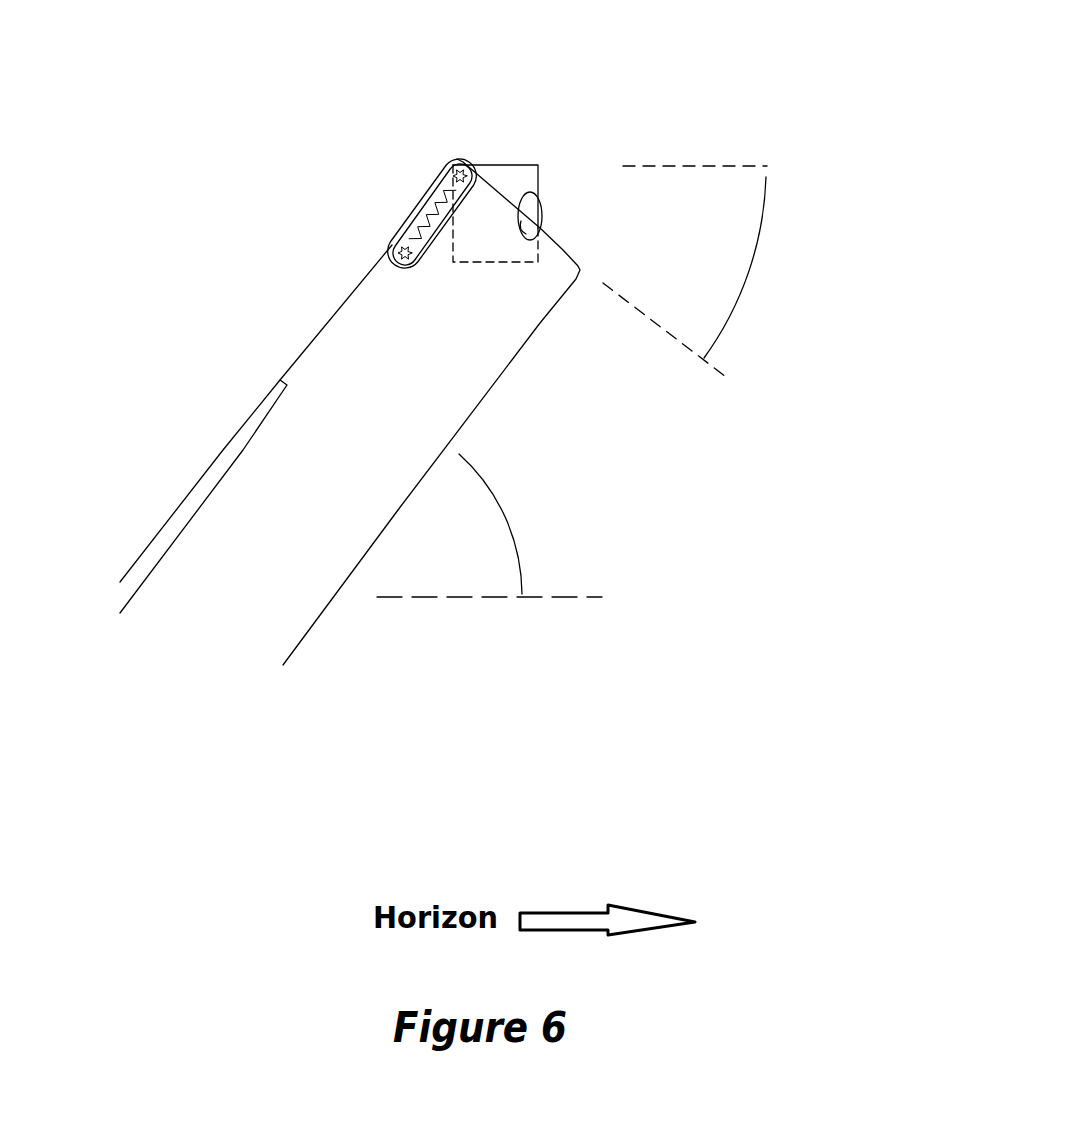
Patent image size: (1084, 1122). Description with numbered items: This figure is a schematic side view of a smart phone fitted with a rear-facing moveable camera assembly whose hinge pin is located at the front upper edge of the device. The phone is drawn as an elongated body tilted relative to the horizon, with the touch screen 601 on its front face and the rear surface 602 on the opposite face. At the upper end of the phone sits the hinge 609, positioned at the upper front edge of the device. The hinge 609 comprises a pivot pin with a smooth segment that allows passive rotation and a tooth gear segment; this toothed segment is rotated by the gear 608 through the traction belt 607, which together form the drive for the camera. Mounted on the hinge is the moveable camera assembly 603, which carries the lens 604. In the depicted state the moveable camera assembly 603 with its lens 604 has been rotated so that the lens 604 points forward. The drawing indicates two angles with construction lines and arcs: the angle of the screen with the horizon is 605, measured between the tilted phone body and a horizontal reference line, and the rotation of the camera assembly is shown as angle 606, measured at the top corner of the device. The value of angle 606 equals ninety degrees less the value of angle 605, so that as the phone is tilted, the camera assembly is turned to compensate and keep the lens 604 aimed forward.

The touch screen 601 is at (222, 452).
The rear surface 602 is at (325, 645).
The moveable camera assembly 603 is at (515, 153).
The lens 604 is at (550, 215).
The angle of the screen with the horizon 605 is at (537, 495).
The rotation angle of the moveable camera assembly 606 is at (780, 266).
The traction belt 607 is at (410, 217).
The gear 608 is at (392, 252).
The hinge 609 is at (438, 165).